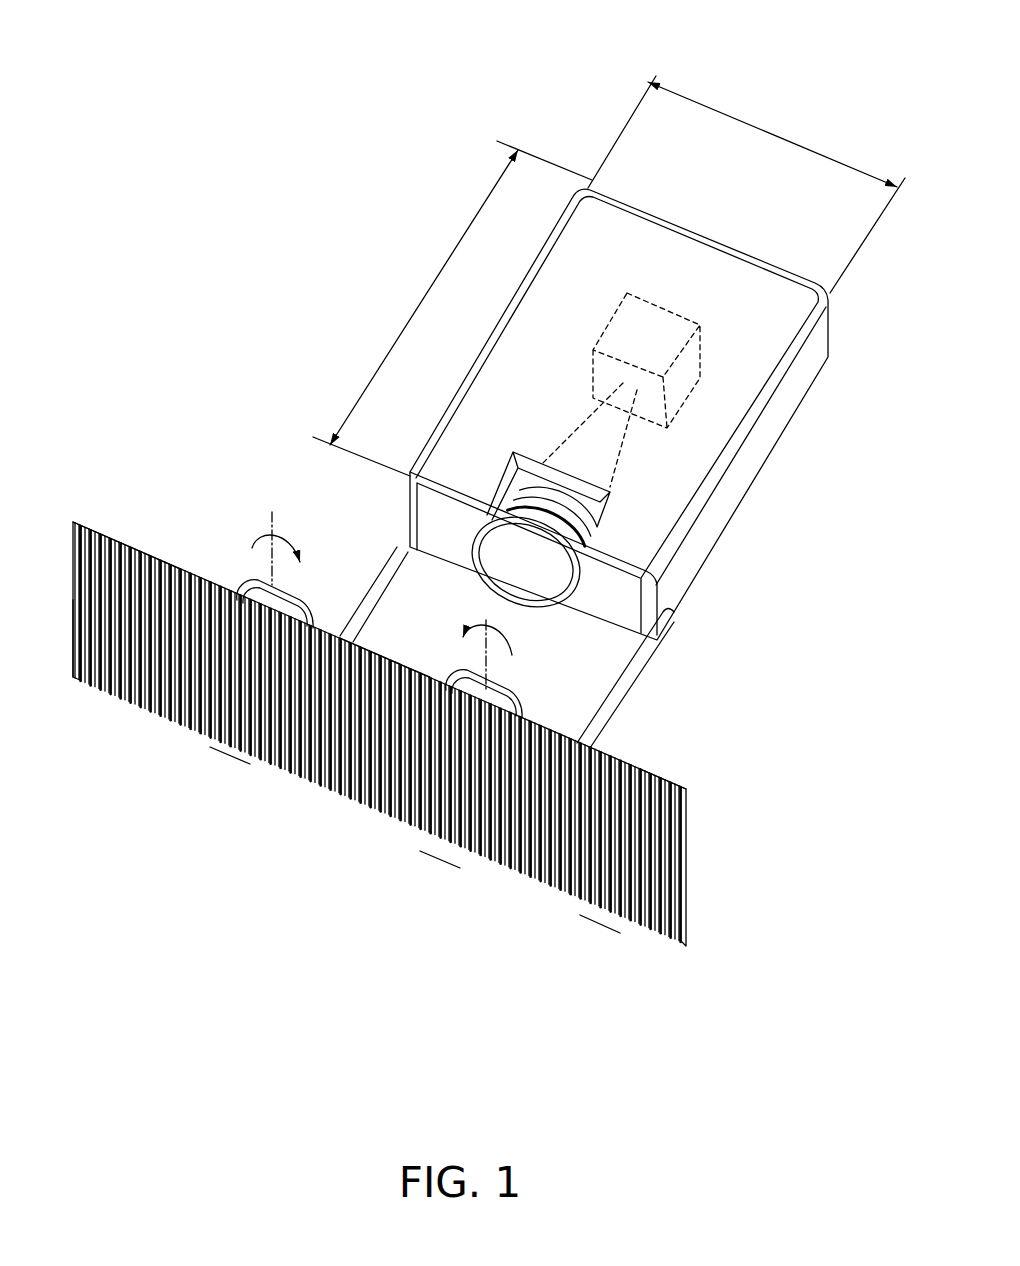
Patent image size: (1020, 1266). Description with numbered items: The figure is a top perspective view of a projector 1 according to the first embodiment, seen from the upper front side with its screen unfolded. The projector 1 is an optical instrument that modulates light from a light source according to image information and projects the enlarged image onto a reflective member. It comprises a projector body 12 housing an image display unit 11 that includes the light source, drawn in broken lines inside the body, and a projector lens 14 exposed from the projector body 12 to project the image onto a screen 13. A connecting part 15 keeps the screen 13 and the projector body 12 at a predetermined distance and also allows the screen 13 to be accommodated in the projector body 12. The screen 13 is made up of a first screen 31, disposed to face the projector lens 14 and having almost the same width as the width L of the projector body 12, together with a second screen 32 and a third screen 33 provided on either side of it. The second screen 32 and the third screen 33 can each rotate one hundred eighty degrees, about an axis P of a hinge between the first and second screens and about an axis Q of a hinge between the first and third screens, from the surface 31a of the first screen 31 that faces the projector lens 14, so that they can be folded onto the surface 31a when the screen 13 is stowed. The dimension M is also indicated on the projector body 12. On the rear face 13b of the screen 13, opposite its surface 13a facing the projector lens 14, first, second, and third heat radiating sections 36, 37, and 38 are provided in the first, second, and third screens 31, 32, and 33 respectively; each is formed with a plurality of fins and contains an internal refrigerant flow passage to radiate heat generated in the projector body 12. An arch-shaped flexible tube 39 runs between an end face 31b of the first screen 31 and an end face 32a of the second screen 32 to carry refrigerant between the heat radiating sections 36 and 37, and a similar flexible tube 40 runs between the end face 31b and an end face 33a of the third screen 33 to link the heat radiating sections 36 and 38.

The projector 1 is at (430, 75).
The image display unit 11 is at (664, 306).
The projector body 12 is at (752, 452).
The screen 13 is at (389, 747).
The surface 13a is at (83, 524).
The rear face 13b is at (75, 653).
The projector lens 14 is at (541, 594).
The connecting part 15 is at (394, 558).
The first screen 31 is at (368, 850).
The surface 31a is at (397, 662).
The end face 31b is at (381, 637).
The second screen 32 is at (160, 741).
The end face 32a is at (143, 548).
The third screen 33 is at (541, 908).
The end face 33a is at (664, 775).
The first heat radiating section 36 is at (427, 853).
The second heat radiating section 37 is at (233, 746).
The third heat radiating section 38 is at (597, 917).
The flexible tube 39 is at (250, 588).
The flexible tube 40 is at (520, 694).
The axis P is at (268, 508).
The axis Q is at (483, 607).
The width L is at (746, 184).
The length M is at (452, 308).